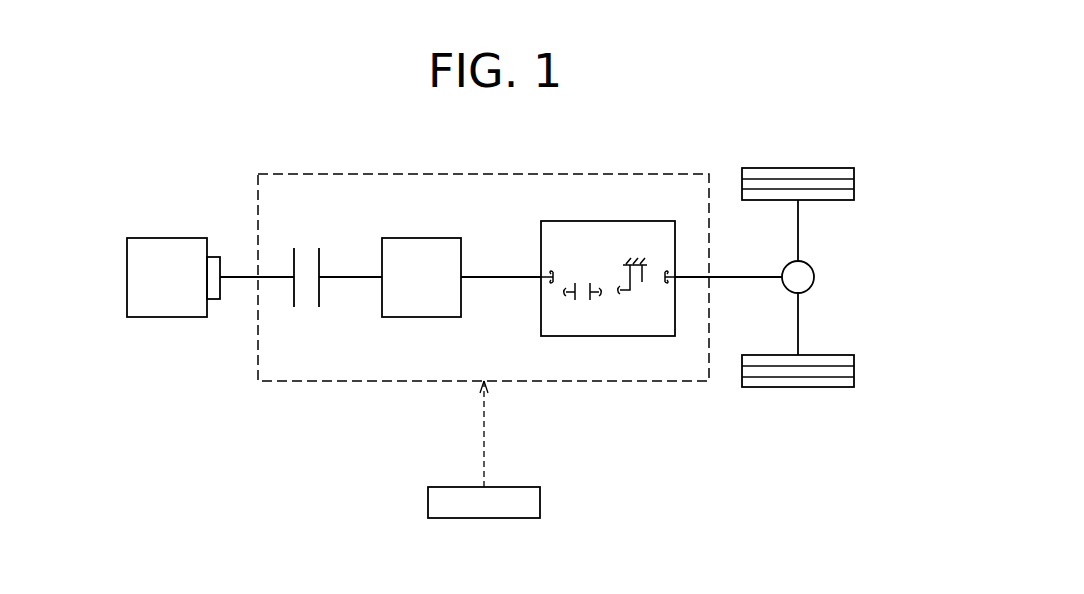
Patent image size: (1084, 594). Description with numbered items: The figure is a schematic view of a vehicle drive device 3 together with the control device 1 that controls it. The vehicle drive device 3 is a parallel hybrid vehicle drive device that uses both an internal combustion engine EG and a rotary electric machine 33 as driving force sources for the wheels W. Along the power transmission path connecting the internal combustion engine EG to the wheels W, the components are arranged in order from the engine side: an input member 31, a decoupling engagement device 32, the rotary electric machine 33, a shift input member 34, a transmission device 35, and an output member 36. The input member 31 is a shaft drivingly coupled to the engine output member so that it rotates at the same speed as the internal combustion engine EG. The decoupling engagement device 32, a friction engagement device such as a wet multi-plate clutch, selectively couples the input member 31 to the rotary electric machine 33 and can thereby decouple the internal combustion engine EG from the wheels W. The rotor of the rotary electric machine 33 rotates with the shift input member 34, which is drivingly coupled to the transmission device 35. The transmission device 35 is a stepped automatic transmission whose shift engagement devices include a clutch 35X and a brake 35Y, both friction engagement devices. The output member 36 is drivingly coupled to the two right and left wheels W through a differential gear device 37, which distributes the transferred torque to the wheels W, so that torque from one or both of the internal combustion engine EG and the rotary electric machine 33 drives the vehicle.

The control device 1 is at (447, 487).
The vehicle drive device 3 is at (262, 385).
The internal combustion engine EG is at (143, 238).
The input member 31 is at (267, 277).
The decoupling engagement device 32 is at (309, 229).
The rotary electric machine 33 is at (407, 238).
The shift input member 34 is at (483, 277).
The transmission device 35 is at (583, 221).
The clutch 35X is at (585, 323).
The brake 35Y is at (640, 322).
The output member 36 is at (700, 277).
The differential gear device 37 is at (808, 263).
The wheels W is at (767, 168).